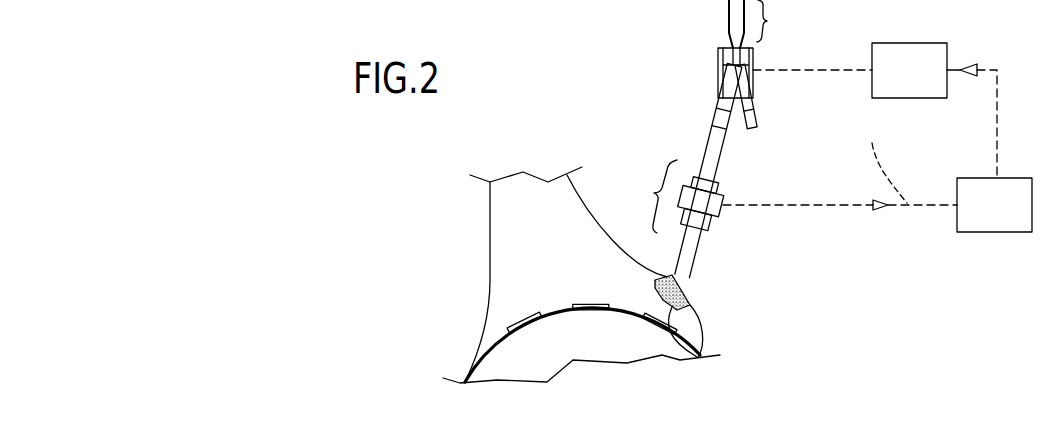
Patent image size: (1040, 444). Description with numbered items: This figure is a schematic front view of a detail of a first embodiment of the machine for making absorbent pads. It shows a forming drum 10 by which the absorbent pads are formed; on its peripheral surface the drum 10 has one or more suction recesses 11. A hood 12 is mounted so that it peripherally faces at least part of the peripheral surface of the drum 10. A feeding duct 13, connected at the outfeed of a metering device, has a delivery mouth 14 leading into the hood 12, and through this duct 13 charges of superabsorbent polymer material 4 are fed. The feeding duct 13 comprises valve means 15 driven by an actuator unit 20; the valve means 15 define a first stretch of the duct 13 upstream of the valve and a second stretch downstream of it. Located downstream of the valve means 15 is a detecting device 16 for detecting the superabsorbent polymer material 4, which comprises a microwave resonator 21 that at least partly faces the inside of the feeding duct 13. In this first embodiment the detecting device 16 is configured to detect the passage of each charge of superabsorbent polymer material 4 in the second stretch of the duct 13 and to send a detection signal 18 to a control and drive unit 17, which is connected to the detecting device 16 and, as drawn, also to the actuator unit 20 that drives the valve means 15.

The superabsorbent polymer material 4 is at (690, 300).
The forming drum 10 is at (570, 353).
The suction recesses 11 is at (580, 310).
The hood 12 is at (523, 226).
The feeding duct 13 is at (702, 134).
The delivery mouth 14 is at (703, 340).
The valve means 15 is at (716, 48).
The detecting device 16 is at (745, 221).
The microwave resonator 21 is at (717, 215).
The control and drive unit 17 is at (1005, 217).
The detection signal 18 is at (884, 160).
The actuator unit 20 is at (918, 84).